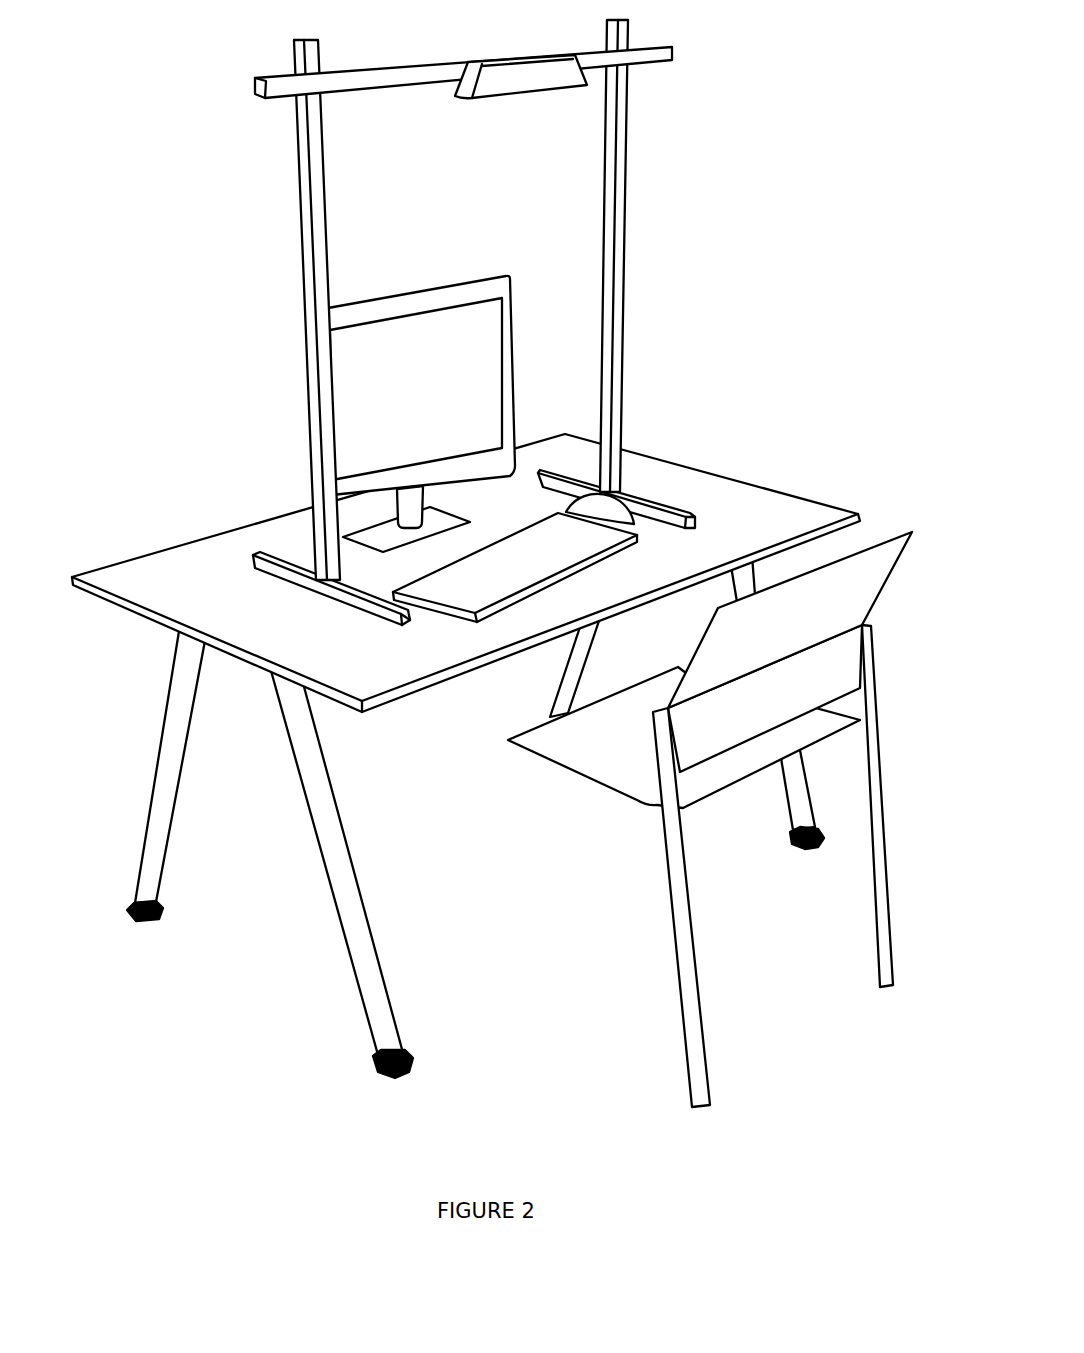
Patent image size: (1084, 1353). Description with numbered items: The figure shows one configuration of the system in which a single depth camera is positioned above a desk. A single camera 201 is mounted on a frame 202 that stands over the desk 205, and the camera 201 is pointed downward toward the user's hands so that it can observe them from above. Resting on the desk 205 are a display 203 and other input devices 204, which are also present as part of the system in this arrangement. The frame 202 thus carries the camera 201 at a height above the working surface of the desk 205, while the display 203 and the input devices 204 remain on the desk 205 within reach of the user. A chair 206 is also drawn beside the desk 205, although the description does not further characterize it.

The camera 201 is at (521, 62).
The frame 202 is at (474, 322).
The display 203 is at (421, 406).
The input devices 204 is at (515, 567).
The desk 205 is at (466, 756).
The chair 206 is at (719, 819).